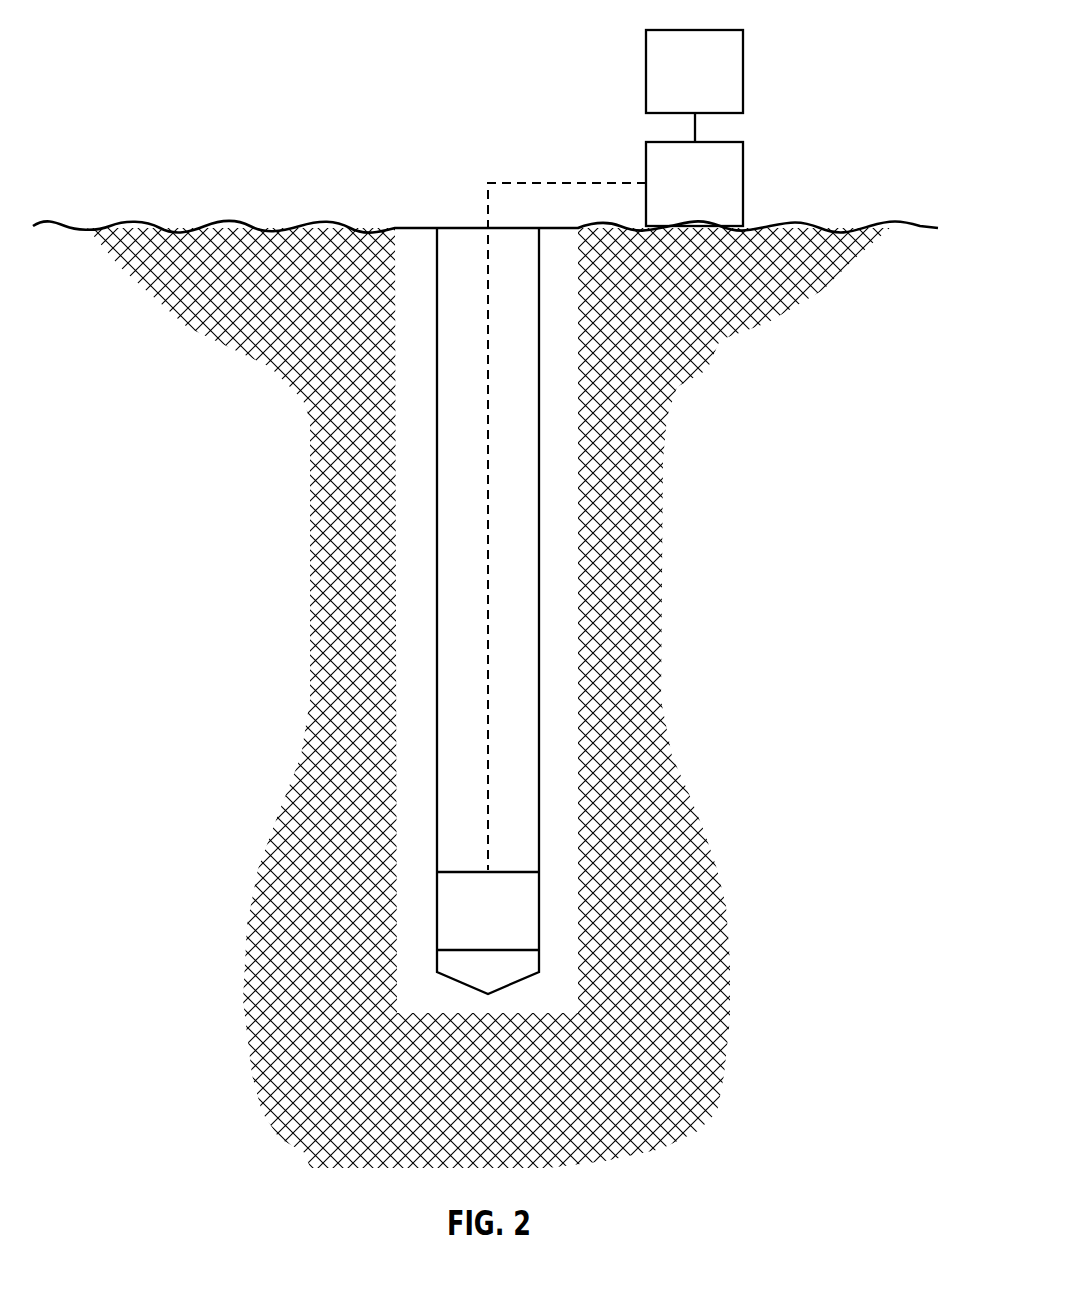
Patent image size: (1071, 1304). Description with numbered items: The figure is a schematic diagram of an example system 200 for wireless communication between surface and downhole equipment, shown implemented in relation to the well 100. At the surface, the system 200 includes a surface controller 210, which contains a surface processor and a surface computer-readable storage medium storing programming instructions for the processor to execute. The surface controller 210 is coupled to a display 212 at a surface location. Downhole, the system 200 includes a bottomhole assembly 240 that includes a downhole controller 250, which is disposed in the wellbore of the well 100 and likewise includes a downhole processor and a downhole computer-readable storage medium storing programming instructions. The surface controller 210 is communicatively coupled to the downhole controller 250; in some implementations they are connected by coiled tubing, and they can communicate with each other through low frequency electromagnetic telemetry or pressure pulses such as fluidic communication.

The well 100 is at (313, 157).
The system 200 is at (573, 91).
The surface controller 210 is at (673, 204).
The display 212 is at (673, 87).
The bottomhole assembly 240 is at (554, 822).
The downhole controller 250 is at (509, 928).